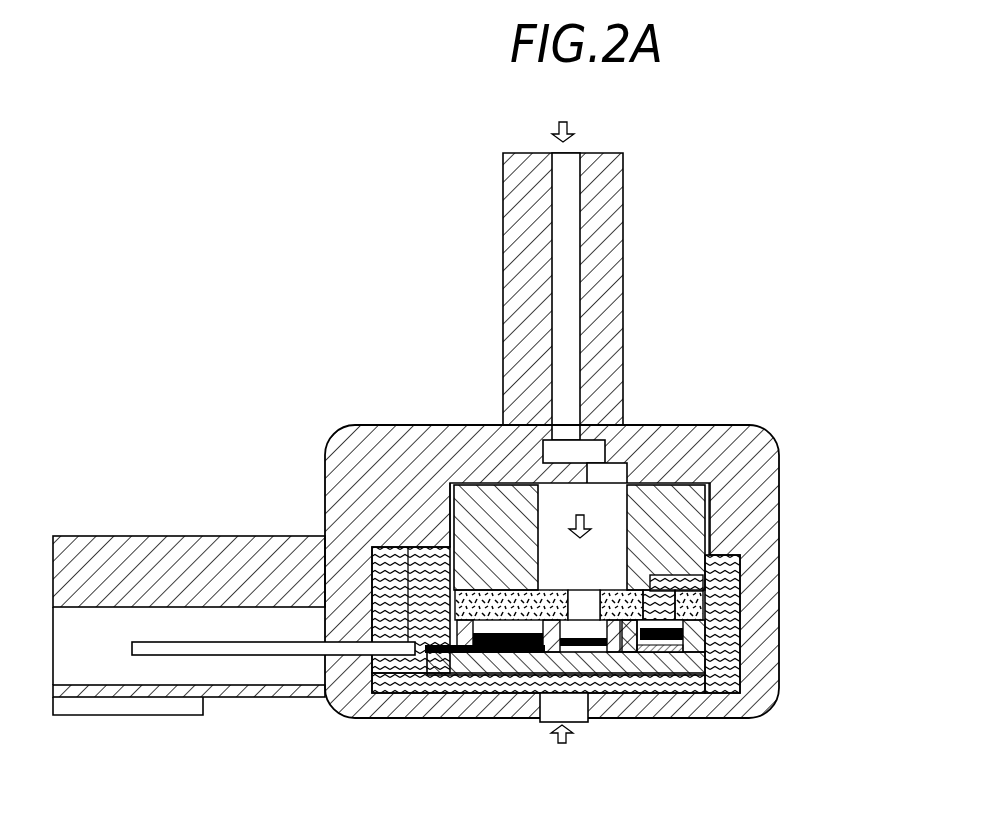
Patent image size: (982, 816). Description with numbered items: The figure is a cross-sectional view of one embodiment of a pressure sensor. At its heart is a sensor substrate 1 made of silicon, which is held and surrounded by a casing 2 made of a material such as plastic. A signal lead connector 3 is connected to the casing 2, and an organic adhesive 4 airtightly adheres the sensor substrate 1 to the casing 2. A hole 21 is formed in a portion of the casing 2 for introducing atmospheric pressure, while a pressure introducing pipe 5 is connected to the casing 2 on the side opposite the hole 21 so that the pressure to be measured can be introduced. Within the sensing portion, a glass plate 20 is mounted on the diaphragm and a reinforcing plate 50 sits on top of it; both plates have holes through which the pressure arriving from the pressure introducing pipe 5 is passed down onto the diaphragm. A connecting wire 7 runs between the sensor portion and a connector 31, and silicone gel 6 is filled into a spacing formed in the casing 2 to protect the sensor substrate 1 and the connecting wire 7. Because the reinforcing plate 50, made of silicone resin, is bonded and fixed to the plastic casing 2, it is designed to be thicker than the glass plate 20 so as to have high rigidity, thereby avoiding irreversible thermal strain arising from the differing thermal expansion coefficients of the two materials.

The sensor substrate 1 is at (689, 695).
The casing 2 is at (392, 425).
The signal lead connector 3 is at (230, 536).
The organic adhesive 4 is at (737, 455).
The pressure introducing pipe 5 is at (623, 320).
The silicone gel 6 is at (393, 698).
The connecting wire 7 is at (400, 547).
The glass plate 20 is at (715, 586).
The hole 21 is at (564, 735).
The connector 31 is at (253, 697).
The reinforcing plate 50 is at (692, 514).